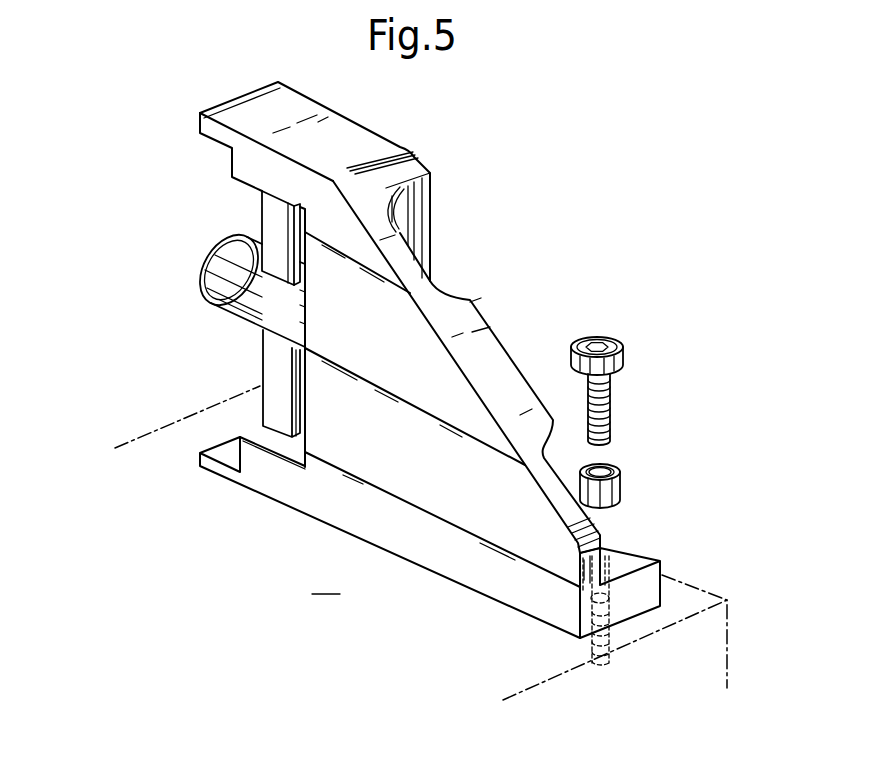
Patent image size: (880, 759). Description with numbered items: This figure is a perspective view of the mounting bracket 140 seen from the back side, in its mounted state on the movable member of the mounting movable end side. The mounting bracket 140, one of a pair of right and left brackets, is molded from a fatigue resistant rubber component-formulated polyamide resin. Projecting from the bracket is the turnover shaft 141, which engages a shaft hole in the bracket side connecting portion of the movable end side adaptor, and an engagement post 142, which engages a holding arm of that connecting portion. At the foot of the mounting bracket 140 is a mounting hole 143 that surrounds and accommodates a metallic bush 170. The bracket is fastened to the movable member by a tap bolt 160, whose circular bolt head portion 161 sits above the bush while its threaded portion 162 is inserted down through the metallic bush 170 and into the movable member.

The mounting bracket 140 is at (492, 167).
The turnover shaft 141 is at (243, 313).
The engagement post 142 is at (277, 222).
The mounting hole 143 is at (598, 553).
The tap bolt 160 is at (674, 386).
The circular bolt head portion 161 is at (625, 355).
The threaded portion 162 is at (652, 409).
The metallic bush 170 is at (627, 483).